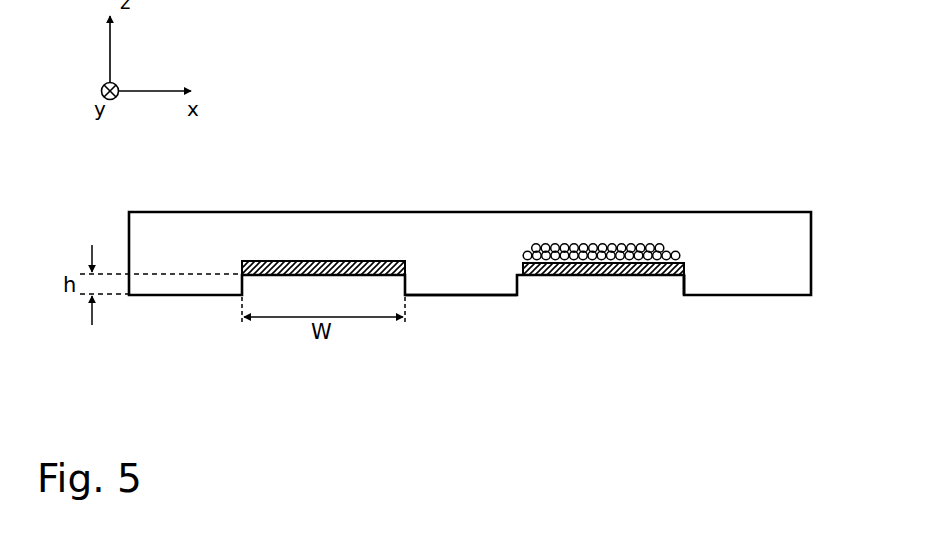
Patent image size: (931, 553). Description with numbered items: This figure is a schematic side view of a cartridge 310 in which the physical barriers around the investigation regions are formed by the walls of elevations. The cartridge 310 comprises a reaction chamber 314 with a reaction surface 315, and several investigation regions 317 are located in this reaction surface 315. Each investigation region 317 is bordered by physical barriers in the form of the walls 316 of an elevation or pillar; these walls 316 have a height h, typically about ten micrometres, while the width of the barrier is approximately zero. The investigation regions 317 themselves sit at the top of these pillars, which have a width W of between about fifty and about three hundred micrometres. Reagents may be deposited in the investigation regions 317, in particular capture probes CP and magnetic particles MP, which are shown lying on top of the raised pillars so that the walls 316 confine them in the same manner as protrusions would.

The cartridge 310 is at (754, 194).
The reaction chamber 314 is at (183, 254).
The reaction surface 315 is at (437, 287).
The walls 316 is at (685, 284).
The investigation regions 317 is at (413, 370).
The capture probes CP is at (315, 261).
The magnetic particles MP is at (577, 244).